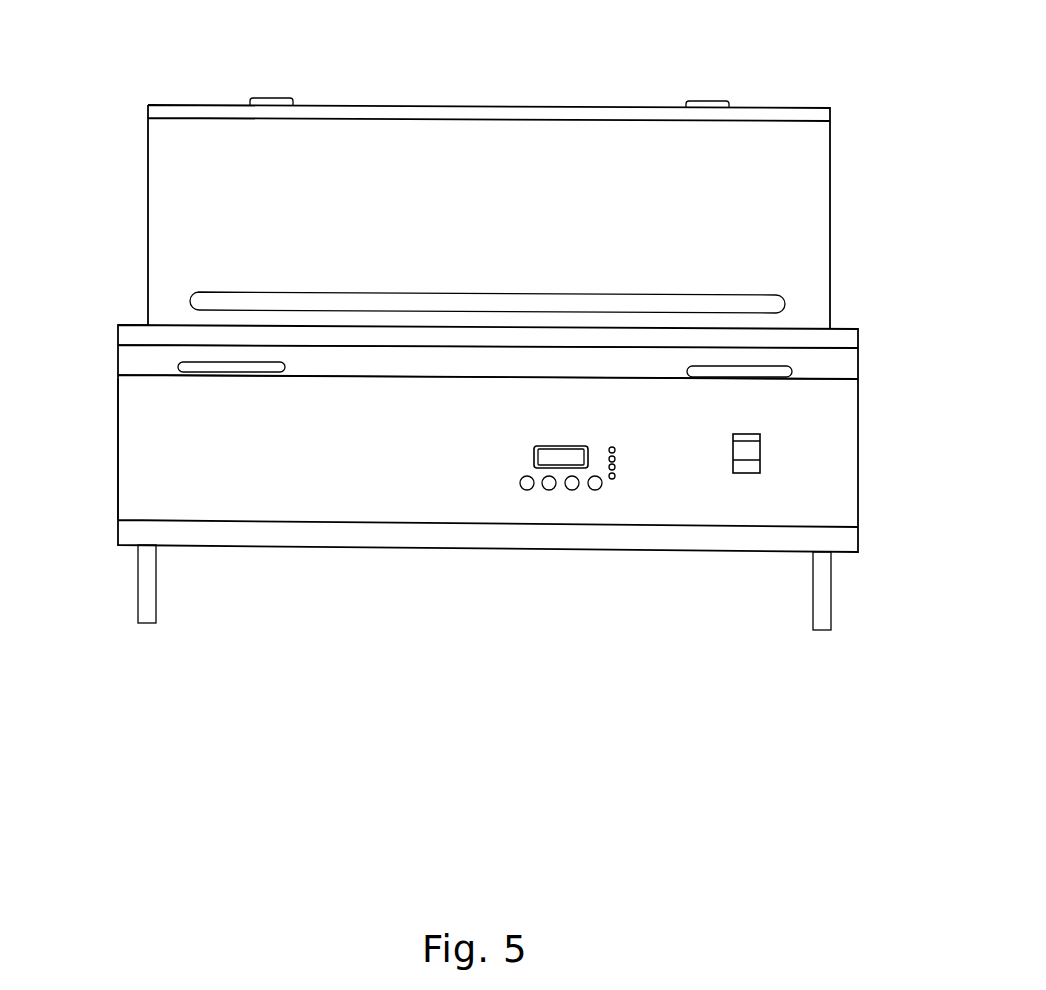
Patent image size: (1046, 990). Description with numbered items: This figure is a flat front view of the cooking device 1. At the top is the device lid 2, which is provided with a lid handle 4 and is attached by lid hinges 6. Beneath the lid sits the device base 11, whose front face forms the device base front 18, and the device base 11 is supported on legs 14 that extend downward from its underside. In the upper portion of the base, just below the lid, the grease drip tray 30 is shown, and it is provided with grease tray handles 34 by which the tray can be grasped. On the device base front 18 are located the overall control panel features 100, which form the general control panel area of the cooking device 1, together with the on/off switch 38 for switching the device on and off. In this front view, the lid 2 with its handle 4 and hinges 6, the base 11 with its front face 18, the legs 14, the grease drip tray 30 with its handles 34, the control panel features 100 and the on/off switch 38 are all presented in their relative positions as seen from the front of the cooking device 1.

The cooking device 1 is at (393, 580).
The device lid 2 is at (575, 182).
The lid handle 4 is at (430, 298).
The lid hinges 6 is at (281, 99).
The device base 11 is at (135, 322).
The legs 14 is at (145, 592).
The device base front 18 is at (176, 495).
The grease drip tray 30 is at (320, 364).
The grease tray handles 34 is at (195, 365).
The on/off switch 38 is at (747, 455).
The control panel features 100 is at (562, 495).